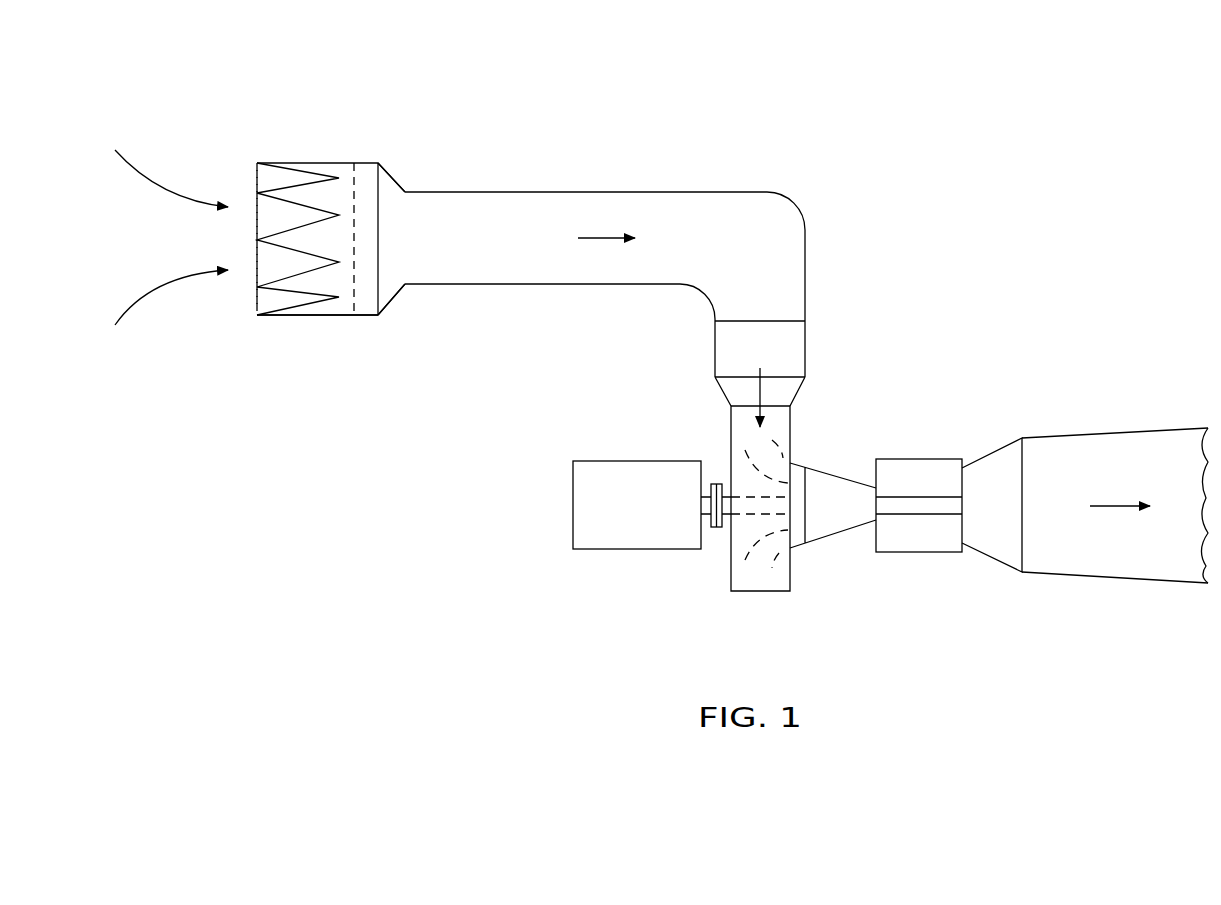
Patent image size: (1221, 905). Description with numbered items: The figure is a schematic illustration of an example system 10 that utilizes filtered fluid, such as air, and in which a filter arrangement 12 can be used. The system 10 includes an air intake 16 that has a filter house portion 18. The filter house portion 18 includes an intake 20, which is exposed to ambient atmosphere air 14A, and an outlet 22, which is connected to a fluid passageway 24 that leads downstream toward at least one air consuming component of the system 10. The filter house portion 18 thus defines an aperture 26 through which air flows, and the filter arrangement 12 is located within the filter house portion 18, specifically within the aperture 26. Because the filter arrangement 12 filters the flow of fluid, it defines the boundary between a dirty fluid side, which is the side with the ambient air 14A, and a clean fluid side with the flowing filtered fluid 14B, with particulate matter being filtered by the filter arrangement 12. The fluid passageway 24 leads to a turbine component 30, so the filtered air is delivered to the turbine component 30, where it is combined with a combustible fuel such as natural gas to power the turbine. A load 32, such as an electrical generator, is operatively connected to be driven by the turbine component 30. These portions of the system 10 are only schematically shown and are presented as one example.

The system 10 is at (975, 135).
The filter arrangement 12 is at (295, 176).
The ambient atmosphere air 14A is at (163, 186).
The filtered fluid 14B is at (754, 388).
The air intake 16 is at (261, 322).
The filter house portion 18 is at (333, 316).
The intake 20 is at (257, 290).
The outlet 22 is at (394, 296).
The fluid passageway 24 is at (722, 193).
The aperture 26 is at (367, 208).
The turbine component 30 is at (1102, 416).
The load 32 is at (597, 472).